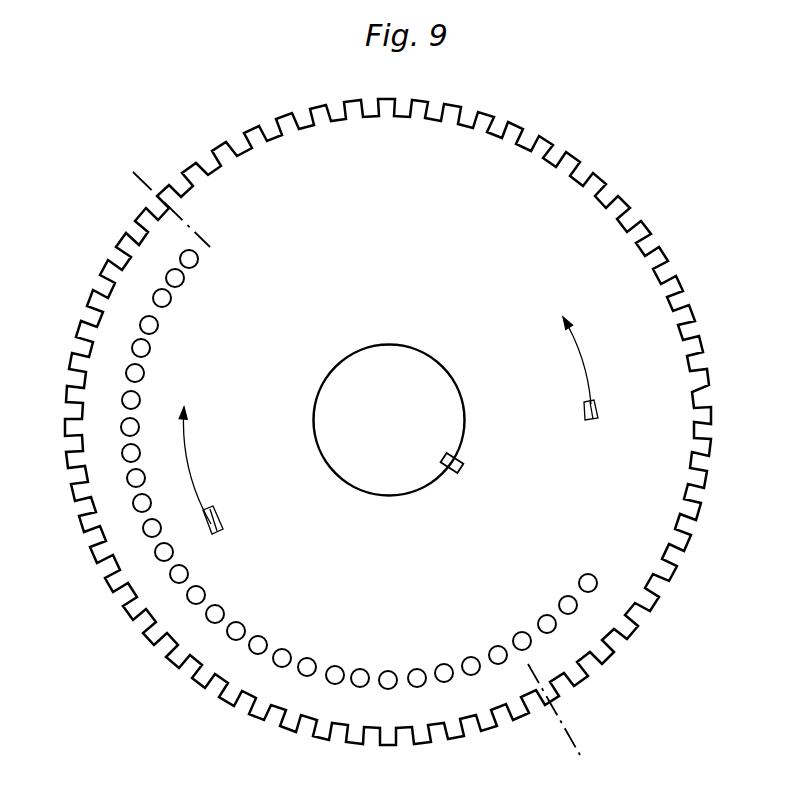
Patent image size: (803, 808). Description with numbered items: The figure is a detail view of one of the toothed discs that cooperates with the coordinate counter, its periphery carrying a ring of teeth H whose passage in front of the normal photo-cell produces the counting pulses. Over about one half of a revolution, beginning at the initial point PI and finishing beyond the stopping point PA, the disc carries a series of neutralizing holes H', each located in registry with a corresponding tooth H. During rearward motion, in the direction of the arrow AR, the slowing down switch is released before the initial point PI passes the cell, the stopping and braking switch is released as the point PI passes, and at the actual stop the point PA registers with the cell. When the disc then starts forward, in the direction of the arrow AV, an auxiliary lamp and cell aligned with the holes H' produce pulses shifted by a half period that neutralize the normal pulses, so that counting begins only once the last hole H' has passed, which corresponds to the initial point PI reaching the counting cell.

The tooth H is at (388, 436).
The neutralizing hole H' is at (359, 469).
The initial point PI is at (127, 168).
The stopping point PA is at (564, 709).
The arrow indicating rearward motion AR is at (201, 470).
The arrow indicating forward motion AV is at (590, 368).